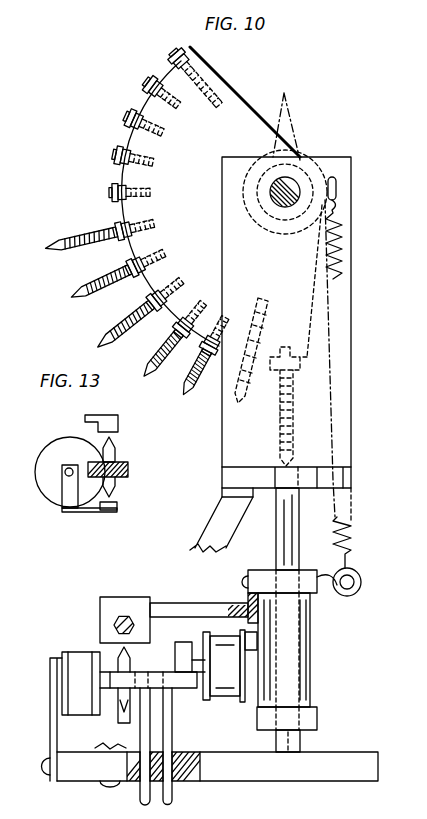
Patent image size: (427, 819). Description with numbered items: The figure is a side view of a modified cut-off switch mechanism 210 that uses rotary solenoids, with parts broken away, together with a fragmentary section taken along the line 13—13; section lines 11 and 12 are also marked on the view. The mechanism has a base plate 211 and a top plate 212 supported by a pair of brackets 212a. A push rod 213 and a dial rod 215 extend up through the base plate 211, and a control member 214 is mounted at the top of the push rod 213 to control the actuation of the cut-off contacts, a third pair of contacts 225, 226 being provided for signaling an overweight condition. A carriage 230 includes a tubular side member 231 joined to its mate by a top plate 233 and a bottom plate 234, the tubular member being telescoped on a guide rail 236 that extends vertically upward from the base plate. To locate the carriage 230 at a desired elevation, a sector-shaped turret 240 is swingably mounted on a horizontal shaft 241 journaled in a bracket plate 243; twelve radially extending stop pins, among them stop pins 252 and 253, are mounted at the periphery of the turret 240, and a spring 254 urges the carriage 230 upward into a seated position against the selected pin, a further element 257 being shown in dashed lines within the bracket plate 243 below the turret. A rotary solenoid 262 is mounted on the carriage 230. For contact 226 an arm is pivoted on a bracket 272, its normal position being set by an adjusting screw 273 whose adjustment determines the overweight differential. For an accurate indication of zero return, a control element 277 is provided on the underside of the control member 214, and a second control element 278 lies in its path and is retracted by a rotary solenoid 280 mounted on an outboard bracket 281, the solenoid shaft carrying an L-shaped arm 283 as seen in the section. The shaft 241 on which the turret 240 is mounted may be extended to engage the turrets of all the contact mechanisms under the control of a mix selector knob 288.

In FIG. 10, the section line 11— 11 is at (15, 10).
In FIG. 10, the section line 12— 12 is at (396, 603).
In FIG. 10, the section line 13— 13 is at (136, 735).
In FIG. 10, the cut-off switch mechanism 210 is at (60, 340).
In FIG. 10, the base plate 211 is at (355, 752).
In FIG. 10, the top plate 212 is at (221, 477).
In FIG. 10, the brackets 212a is at (212, 525).
In FIG. 10, the push rod 213 is at (142, 788).
In FIG. 10, the control member 214 is at (190, 690).
In FIG. 13, the control member 214 is at (125, 468).
In FIG. 10, the dial rod 215 is at (172, 786).
In FIG. 10, the contact 225 is at (143, 685).
In FIG. 13, the contact 225 is at (115, 449).
In FIG. 13, the contact 226 is at (118, 424).
In FIG. 10, the carriage 230 is at (318, 662).
In FIG. 10, the tubular side member 231 is at (310, 668).
In FIG. 10, the top plate 233 is at (262, 570).
In FIG. 10, the bottom plate 234 is at (317, 718).
In FIG. 10, the guide rail 236 is at (298, 540).
In FIG. 10, the turret 240 is at (250, 94).
In FIG. 10, the horizontal shaft 241 is at (283, 205).
In FIG. 10, the bracket plate 243 is at (351, 350).
In FIG. 10, the stop pin 252 is at (242, 394).
In FIG. 10, the stop pin 253 is at (203, 391).
In FIG. 10, the spring 254 is at (343, 247).
In FIG. 10, the stop bolt 257 is at (293, 410).
In FIG. 10, the rotary solenoid 262 is at (225, 703).
In FIG. 10, the bracket 272 is at (190, 604).
In FIG. 10, the adjusting screw 273 is at (125, 620).
In FIG. 13, the control element 277 is at (117, 488).
In FIG. 13, the second control element 278 is at (117, 505).
In FIG. 10, the rotary solenoid 280 is at (78, 655).
In FIG. 13, the rotary solenoid 280 is at (45, 455).
In FIG. 10, the outboard bracket 281 is at (52, 733).
In FIG. 13, the L-shaped arm 283 is at (75, 512).
In FIG. 10, the knob 288 is at (312, 158).